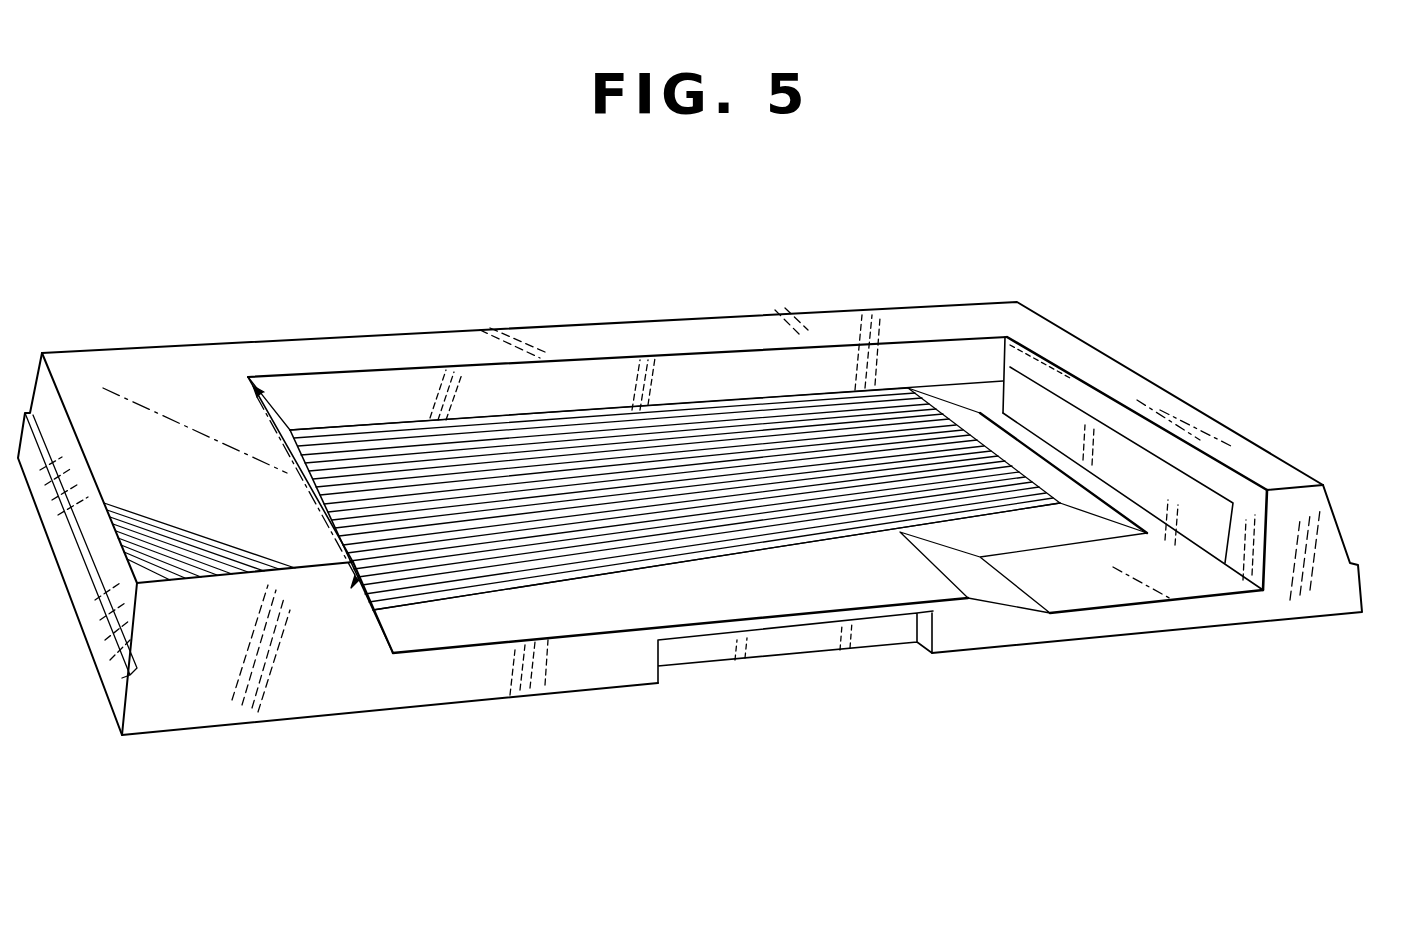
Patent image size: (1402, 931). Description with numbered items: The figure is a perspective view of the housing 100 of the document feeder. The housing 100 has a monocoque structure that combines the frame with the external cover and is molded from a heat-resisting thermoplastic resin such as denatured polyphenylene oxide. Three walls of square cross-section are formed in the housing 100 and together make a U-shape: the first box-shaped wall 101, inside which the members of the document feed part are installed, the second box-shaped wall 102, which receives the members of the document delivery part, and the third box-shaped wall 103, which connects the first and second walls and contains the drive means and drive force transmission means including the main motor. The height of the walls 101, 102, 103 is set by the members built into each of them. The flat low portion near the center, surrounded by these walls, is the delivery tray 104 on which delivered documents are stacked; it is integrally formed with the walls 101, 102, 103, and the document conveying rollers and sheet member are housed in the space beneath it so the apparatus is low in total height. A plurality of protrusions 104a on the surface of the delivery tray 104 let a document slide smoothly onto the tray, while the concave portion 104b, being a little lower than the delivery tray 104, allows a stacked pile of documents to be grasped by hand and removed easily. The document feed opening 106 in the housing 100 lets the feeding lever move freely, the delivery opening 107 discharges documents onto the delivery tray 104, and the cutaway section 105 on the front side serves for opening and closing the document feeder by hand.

The housing 100 is at (620, 307).
The first box-shaped wall 101 is at (180, 362).
The second box-shaped wall 102 is at (1130, 387).
The third box-shaped wall 103 is at (542, 340).
The delivery tray 104 is at (715, 604).
The protrusions 104a is at (772, 572).
The concave portion 104b is at (1120, 597).
The cutaway section 105 is at (835, 640).
The document feed opening 106 is at (277, 410).
The delivery opening 107 is at (1168, 483).